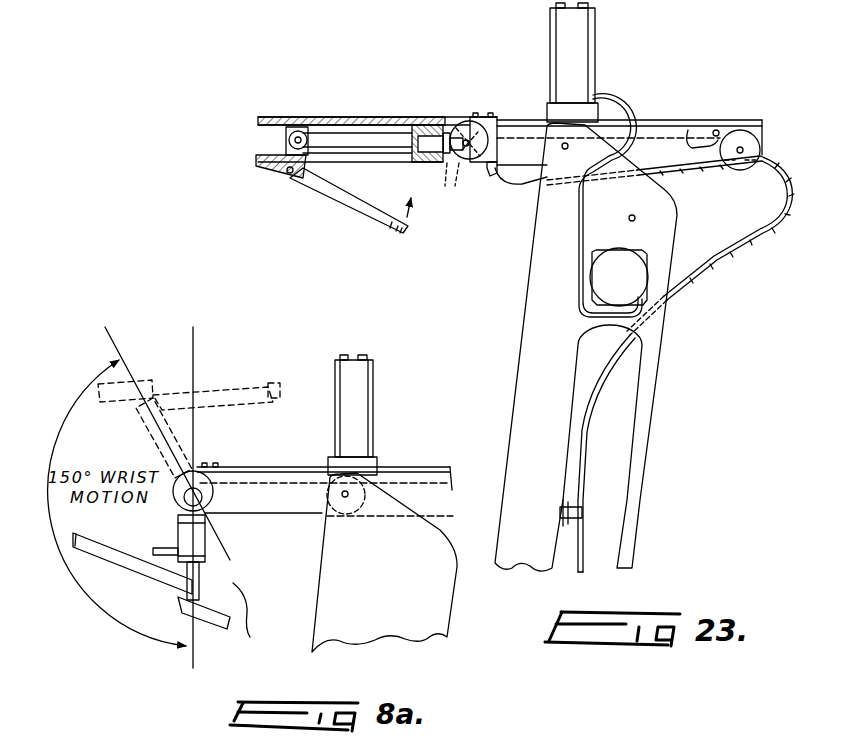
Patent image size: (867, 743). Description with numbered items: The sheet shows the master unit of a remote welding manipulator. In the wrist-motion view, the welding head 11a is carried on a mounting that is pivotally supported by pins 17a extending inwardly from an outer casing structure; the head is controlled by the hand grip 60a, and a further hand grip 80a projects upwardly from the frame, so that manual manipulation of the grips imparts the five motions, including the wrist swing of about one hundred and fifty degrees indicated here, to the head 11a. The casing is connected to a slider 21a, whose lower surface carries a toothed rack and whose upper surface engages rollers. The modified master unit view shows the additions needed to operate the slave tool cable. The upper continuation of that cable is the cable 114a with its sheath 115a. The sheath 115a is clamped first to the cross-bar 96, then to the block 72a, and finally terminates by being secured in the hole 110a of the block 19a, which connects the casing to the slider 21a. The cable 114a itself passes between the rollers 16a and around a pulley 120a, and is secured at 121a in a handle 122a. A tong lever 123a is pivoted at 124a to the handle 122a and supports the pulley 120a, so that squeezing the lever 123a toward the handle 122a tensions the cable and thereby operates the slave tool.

In FIG. 23, the pulley 120a is at (310, 143).
In FIG. 23, the handle 122a is at (368, 120).
In FIG. 23, the cable 114a is at (392, 132).
In FIG. 23, the cable securing point 121a is at (414, 158).
In FIG. 23, the pivot 124a is at (291, 174).
In FIG. 23, the tong lever 123a is at (382, 228).
In FIG. 23, the rollers 16a is at (444, 186).
In FIG. 23, the block 19a is at (480, 113).
In FIG. 23, the hole 110a is at (486, 177).
In FIG. 23, the block 72a is at (688, 147).
In FIG. 23, the cross-bar 96 is at (590, 510).
In FIG. 23, the sheath 115a is at (580, 560).
In FIG. 8A, the hand grip 80a is at (353, 418).
In FIG. 8A, the slider 21a is at (418, 473).
In FIG. 8A, the pins 17a is at (178, 507).
In FIG. 8A, the hand grip 60a is at (107, 560).
In FIG. 8A, the welding head 11a is at (256, 610).